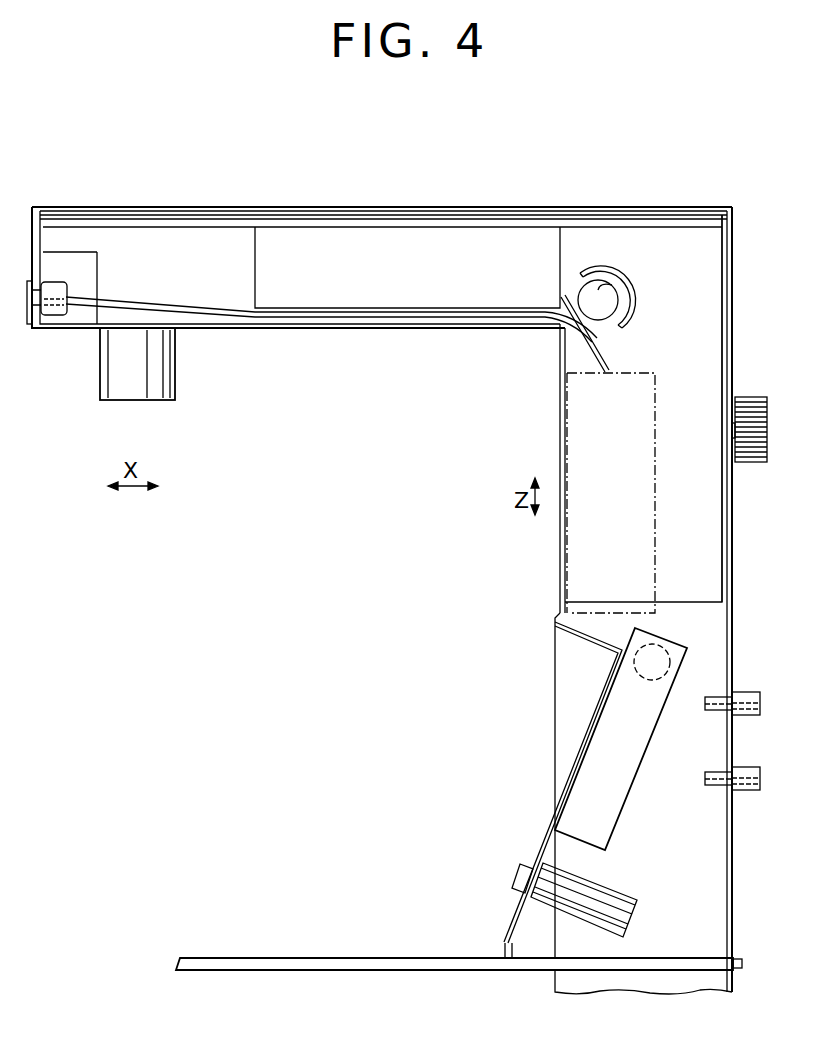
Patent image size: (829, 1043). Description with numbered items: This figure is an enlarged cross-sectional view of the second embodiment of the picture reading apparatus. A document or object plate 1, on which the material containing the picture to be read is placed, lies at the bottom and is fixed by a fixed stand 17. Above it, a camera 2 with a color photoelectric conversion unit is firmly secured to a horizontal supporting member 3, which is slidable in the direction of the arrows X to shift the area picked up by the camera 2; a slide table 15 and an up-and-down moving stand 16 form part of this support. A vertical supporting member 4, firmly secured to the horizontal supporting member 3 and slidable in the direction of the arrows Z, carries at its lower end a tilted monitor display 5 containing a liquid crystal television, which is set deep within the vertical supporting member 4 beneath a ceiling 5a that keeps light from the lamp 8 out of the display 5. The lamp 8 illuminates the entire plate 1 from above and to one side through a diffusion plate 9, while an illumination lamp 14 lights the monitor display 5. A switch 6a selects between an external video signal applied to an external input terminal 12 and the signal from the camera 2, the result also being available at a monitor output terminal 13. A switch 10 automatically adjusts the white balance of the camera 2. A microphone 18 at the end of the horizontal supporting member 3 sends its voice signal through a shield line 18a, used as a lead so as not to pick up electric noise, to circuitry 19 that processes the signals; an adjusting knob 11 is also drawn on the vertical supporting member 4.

The document or object plate 1 is at (383, 960).
The camera 2 is at (128, 392).
The horizontal supporting member 3 is at (344, 207).
The vertical supporting member 4 is at (724, 364).
The monitor display 5 is at (620, 815).
The ceiling 5a is at (588, 645).
The switch 6a is at (515, 893).
The lamp 8 is at (622, 290).
The diffusion plate 9 is at (603, 337).
The switch 10 is at (29, 326).
The adjusting knob 11 is at (750, 460).
The external input terminal 12 is at (750, 690).
The monitor output terminal 13 is at (750, 765).
The illumination lamp 14 is at (660, 668).
The slide table 15 is at (132, 227).
The up-and-down moving stand 16 is at (250, 215).
The fixed stand 17 is at (730, 278).
The microphone 18 is at (60, 323).
The shield line 18a is at (232, 322).
The circuitry 19 is at (570, 472).